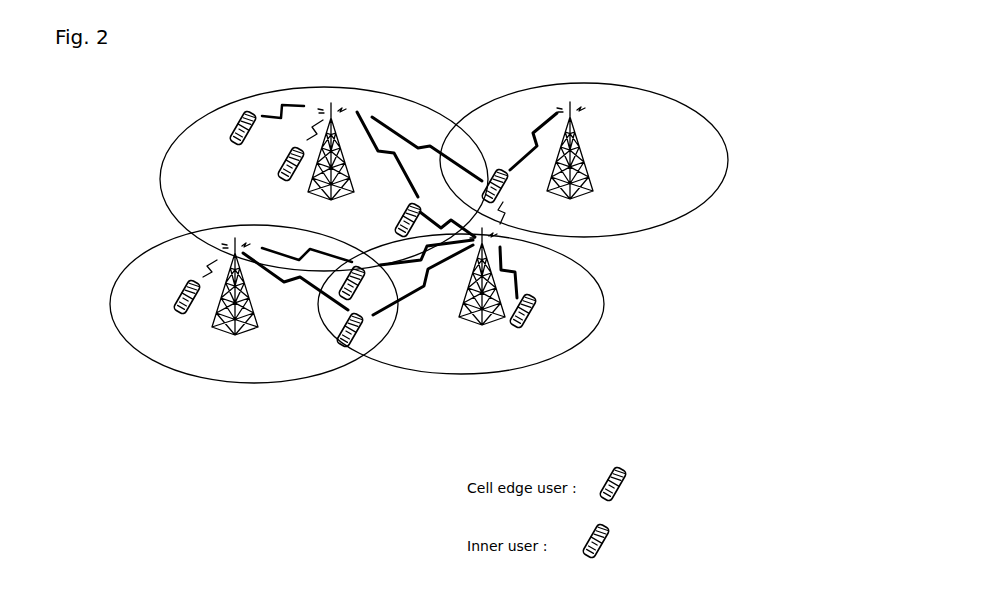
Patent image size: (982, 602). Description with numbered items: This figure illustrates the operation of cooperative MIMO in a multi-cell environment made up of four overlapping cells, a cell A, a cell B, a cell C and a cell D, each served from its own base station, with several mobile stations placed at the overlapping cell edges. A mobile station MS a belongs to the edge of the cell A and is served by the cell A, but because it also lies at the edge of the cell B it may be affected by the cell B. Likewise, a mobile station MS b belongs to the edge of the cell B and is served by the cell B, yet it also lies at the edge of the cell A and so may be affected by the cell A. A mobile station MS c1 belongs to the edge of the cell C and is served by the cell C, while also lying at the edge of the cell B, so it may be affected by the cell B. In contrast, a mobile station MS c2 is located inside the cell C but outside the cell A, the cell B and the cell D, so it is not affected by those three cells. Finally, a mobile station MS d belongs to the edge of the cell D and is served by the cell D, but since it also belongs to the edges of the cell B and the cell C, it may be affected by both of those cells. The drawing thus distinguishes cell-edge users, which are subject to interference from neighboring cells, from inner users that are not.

The cell A is at (235, 299).
The cell B is at (482, 287).
The cell C is at (331, 162).
The cell D is at (570, 159).
The mobile station MSa MS a is at (330, 335).
The mobile station MSb MS b is at (368, 283).
The mobile station MSc1 MS c1 is at (386, 223).
The mobile station MSc2 MS c2 is at (230, 140).
The mobile station MSd MS d is at (497, 172).